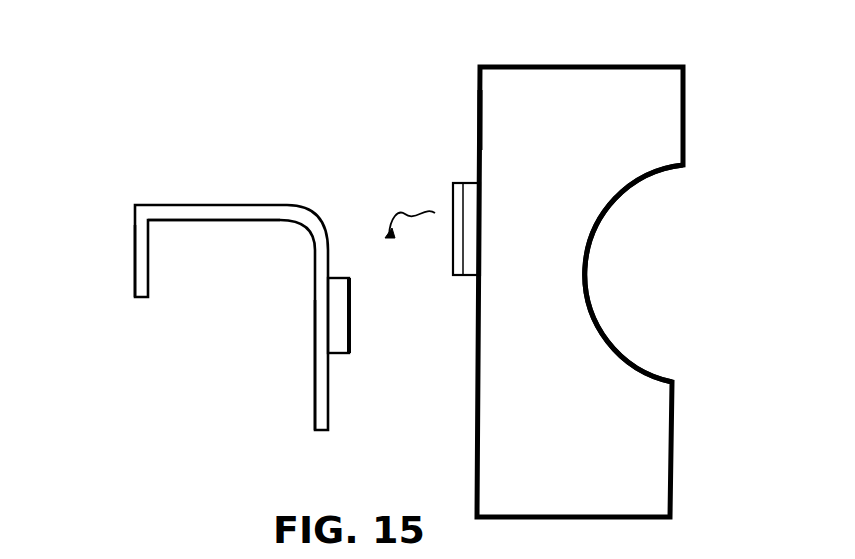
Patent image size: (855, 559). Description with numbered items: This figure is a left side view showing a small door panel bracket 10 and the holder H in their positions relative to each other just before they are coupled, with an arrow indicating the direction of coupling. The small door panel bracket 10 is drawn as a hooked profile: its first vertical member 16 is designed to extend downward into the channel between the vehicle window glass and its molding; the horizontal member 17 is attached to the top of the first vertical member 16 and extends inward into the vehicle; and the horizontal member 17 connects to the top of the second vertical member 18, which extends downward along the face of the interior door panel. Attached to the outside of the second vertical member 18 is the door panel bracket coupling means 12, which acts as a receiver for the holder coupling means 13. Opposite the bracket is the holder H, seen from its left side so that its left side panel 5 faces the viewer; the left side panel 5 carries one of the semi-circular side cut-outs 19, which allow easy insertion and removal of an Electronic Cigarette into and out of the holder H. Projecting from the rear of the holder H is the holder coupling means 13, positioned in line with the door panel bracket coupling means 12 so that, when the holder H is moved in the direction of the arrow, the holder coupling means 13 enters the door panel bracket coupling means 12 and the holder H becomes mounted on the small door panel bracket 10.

The left side panel 5 is at (500, 370).
The holder H is at (520, 100).
The small door panel bracket 10 is at (136, 207).
The door panel bracket coupling means 12 is at (338, 332).
The holder coupling means 13 is at (452, 263).
The first vertical member 16 is at (148, 258).
The horizontal member 17 is at (233, 203).
The second vertical member 18 is at (313, 372).
The semi-circular side cut-out 19 is at (613, 288).